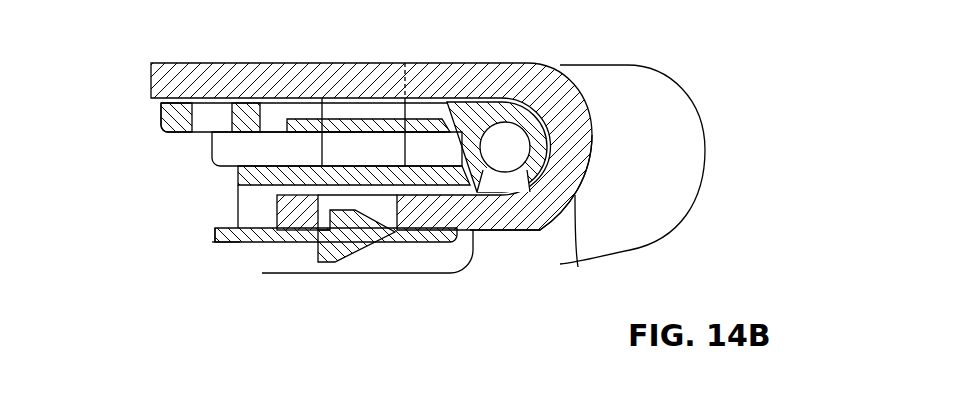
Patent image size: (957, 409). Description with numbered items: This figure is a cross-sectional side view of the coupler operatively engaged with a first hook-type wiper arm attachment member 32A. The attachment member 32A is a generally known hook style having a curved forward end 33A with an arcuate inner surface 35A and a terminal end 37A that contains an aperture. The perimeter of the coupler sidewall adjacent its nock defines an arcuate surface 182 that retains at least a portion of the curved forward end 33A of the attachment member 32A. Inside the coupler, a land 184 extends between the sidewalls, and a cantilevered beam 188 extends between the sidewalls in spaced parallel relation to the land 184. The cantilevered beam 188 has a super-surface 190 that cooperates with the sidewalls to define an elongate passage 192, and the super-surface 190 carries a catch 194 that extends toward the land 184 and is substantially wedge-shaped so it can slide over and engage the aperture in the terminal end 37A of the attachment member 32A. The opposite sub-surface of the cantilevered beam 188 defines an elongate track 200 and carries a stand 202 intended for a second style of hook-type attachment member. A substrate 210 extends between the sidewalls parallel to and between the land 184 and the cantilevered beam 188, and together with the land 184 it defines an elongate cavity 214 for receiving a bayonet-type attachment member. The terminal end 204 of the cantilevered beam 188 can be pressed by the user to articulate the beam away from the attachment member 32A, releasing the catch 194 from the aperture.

The first hook-type wiper arm attachment member 32A is at (142, 54).
The curved forward end 33A is at (573, 92).
The arcuate inner surface 35A is at (538, 232).
The arcuate surface 182 is at (705, 170).
The land 184 is at (160, 112).
The elongate cavity 214 is at (210, 144).
The substrate 210 is at (237, 173).
The elongate passage 192 is at (226, 202).
The super-surface 190 is at (235, 230).
The terminal end 204 is at (217, 236).
The cantilevered beam 188 is at (212, 243).
The terminal end 37A is at (277, 212).
The stand 202 is at (333, 274).
The elongate track 200 is at (279, 266).
The catch 194 is at (405, 222).